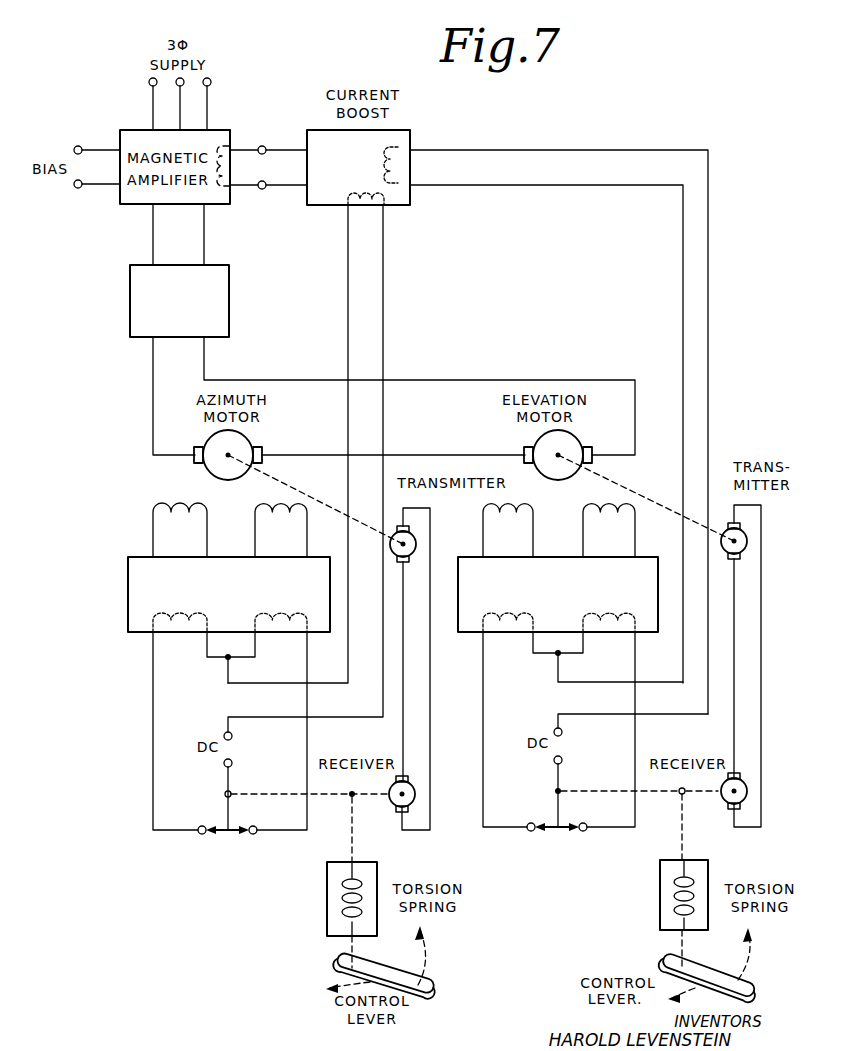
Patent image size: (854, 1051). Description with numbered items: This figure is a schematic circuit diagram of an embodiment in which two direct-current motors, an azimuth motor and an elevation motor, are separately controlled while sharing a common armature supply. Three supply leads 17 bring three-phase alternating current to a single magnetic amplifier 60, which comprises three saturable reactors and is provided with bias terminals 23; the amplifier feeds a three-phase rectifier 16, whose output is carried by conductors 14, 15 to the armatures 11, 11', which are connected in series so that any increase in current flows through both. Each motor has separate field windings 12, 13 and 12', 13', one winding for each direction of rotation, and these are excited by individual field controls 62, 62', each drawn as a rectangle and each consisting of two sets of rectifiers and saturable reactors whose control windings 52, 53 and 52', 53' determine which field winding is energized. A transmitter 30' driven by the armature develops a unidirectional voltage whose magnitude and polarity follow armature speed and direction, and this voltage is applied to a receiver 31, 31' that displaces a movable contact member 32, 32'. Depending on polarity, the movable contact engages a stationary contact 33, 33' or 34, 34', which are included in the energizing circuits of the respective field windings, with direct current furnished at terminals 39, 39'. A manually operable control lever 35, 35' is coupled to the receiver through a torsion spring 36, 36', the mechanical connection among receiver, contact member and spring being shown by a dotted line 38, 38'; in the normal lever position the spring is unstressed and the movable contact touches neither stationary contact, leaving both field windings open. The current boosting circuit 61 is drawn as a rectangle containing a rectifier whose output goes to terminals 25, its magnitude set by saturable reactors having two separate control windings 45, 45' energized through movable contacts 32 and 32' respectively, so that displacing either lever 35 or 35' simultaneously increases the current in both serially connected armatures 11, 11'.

The armature 11 is at (359, 450).
The armature 11' is at (575, 450).
The field winding 12 is at (153, 516).
The field winding 12' is at (528, 518).
The field winding 13 is at (264, 520).
The field winding 13' is at (628, 510).
The conductor 14 is at (153, 372).
The conductor 15 is at (204, 360).
The three-phase rectifier 16 is at (232, 304).
The supply leads 17 is at (149, 83).
The bias terminals 23 is at (77, 146).
The terminals 25 is at (265, 147).
The transmitter 30' is at (764, 666).
The receiver 31 is at (429, 788).
The receiver 31' is at (764, 786).
The movable contact member 32 is at (307, 803).
The movable contact member 32' is at (636, 802).
The stationary contact 33 is at (218, 846).
The stationary contact 33' is at (548, 844).
The stationary contact 34 is at (249, 846).
The stationary contact 34' is at (580, 842).
The control lever 35 is at (410, 963).
The control lever 35' is at (733, 966).
The torsion spring 36 is at (324, 905).
The torsion spring 36' is at (653, 904).
The dotted line 38 is at (361, 882).
The dotted line 38' is at (711, 881).
The direct current supply terminals 39 is at (255, 778).
The direct current supply terminals 39' is at (587, 774).
The control winding 45 is at (396, 217).
The control winding 45' is at (436, 165).
The control winding 52 is at (180, 644).
The control winding 52' is at (508, 643).
The control winding 53 is at (281, 643).
The control winding 53' is at (609, 643).
The magnetic amplifier 60 is at (232, 138).
The current boosting circuit 61 is at (410, 138).
The field control 62 is at (202, 594).
The field control 62' is at (567, 616).